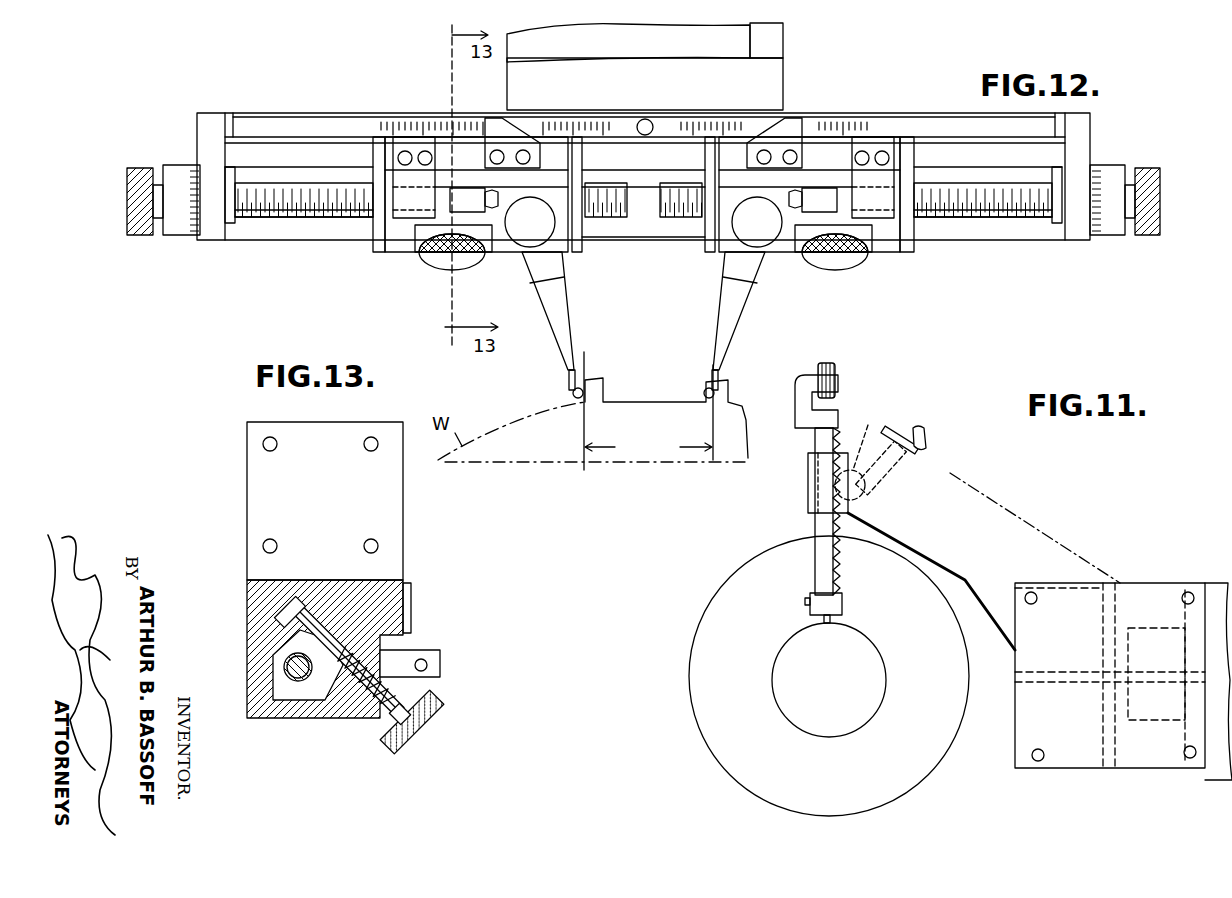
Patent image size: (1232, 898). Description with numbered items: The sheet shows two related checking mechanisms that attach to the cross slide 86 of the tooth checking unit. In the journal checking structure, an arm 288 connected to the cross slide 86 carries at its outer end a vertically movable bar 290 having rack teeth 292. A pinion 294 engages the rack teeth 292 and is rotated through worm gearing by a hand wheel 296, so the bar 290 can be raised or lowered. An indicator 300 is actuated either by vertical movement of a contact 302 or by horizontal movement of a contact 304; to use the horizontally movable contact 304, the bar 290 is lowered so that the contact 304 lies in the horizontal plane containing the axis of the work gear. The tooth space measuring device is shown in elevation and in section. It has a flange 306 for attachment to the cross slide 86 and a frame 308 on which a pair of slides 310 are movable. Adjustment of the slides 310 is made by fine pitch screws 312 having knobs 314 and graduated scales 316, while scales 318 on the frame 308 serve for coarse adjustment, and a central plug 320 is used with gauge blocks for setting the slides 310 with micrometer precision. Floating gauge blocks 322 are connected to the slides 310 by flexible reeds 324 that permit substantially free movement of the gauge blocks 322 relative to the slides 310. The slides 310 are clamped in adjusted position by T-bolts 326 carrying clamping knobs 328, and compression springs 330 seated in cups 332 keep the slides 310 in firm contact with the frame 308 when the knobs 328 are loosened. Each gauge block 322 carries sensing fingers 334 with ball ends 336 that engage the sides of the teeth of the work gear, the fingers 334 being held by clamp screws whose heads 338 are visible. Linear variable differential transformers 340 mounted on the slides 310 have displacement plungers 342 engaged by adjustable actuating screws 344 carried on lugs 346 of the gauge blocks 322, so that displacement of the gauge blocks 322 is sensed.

In FIG. 12, the cross slide 86 is at (627, 53).
In FIG. 11, the cross slide 86 is at (1161, 580).
In FIG. 11, the arm 288 is at (1005, 515).
In FIG. 11, the vertically movable bar 290 is at (815, 524).
In FIG. 11, the rack teeth 292 is at (840, 537).
In FIG. 11, the pinion 294 is at (863, 449).
In FIG. 11, the hand wheel 296 is at (915, 446).
In FIG. 11, the indicator 300 is at (838, 380).
In FIG. 11, the contact 302 is at (825, 621).
In FIG. 11, the contact 304 is at (808, 600).
In FIG. 12, the flange 306 is at (784, 45).
In FIG. 13, the flange 306 is at (403, 528).
In FIG. 12, the frame 308 is at (348, 113).
In FIG. 13, the frame 308 is at (250, 718).
In FIG. 12, the slides 310 is at (700, 153).
In FIG. 13, the slides 310 is at (292, 714).
In FIG. 12, the fine pitch screws 312 is at (293, 218).
In FIG. 13, the fine pitch screws 312 is at (285, 665).
In FIG. 12, the knobs 314 is at (135, 168).
In FIG. 12, the graduated scales 316 is at (183, 165).
In FIG. 12, the scales 318 is at (428, 120).
In FIG. 12, the central plug 320 is at (656, 118).
In FIG. 12, the floating gauge blocks 322 is at (398, 253).
In FIG. 12, the flexible reeds 324 is at (373, 172).
In FIG. 13, the T-bolts 326 is at (283, 610).
In FIG. 12, the clamping knobs 328 is at (438, 277).
In FIG. 13, the clamping knobs 328 is at (393, 748).
In FIG. 13, the compression springs 330 is at (355, 700).
In FIG. 13, the cups 332 is at (318, 715).
In FIG. 12, the sensing fingers 334 is at (571, 326).
In FIG. 12, the ball ends 336 is at (573, 393).
In FIG. 12, the clamp screw heads 338 is at (730, 249).
In FIG. 12, the linear variable differential transformers 340 is at (890, 174).
In FIG. 12, the displacement plungers 342 is at (845, 185).
In FIG. 12, the adjustable actuating screws 344 is at (837, 187).
In FIG. 12, the lugs 346 is at (802, 207).